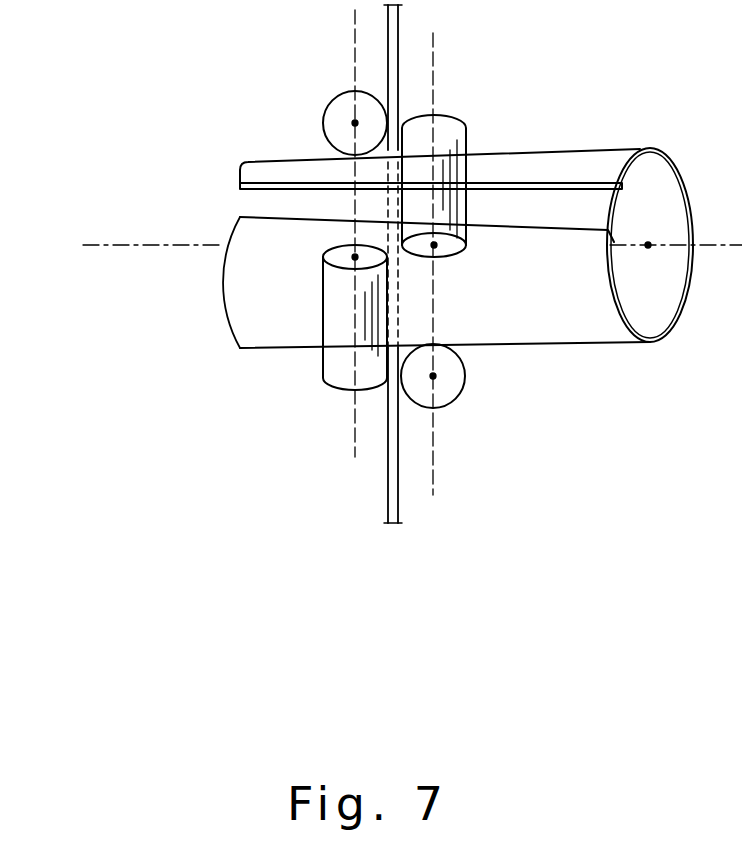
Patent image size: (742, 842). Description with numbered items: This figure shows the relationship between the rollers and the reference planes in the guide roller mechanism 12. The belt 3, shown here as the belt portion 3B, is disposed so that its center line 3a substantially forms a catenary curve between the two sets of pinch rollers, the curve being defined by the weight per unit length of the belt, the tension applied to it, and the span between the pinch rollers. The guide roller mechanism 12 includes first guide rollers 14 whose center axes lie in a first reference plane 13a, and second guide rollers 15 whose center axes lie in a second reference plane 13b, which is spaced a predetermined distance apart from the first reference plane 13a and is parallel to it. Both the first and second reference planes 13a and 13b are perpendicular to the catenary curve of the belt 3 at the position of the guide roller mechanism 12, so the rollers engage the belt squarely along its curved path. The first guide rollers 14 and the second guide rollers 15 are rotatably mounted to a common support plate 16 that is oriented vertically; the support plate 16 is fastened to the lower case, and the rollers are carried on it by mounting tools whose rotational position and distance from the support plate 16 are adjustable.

The belt 3B is at (477, 213).
The belt 3 is at (597, 150).
The center line of the belt 3a is at (139, 250).
The guide roller mechanism 12 is at (489, 91).
The first reference plane 13a is at (353, 49).
The second reference plane 13b is at (433, 52).
The first guide roller 14 is at (322, 125).
The second guide roller 15 is at (466, 143).
The support plate 16 is at (392, 483).